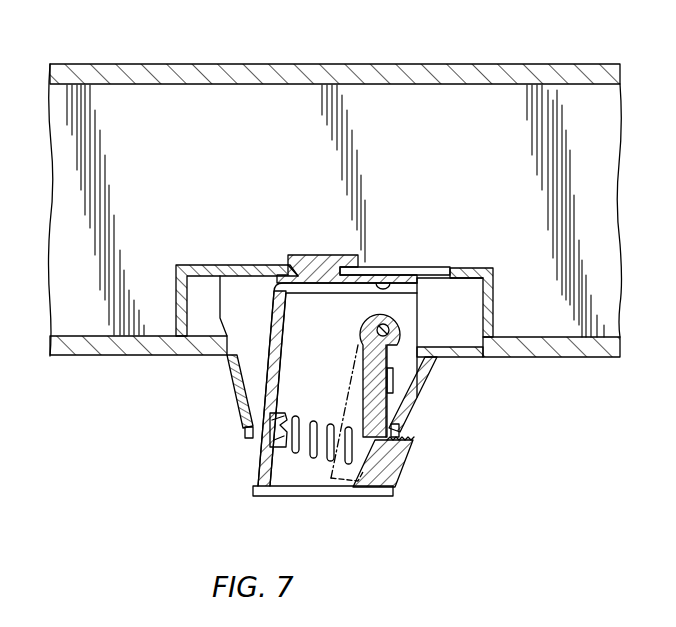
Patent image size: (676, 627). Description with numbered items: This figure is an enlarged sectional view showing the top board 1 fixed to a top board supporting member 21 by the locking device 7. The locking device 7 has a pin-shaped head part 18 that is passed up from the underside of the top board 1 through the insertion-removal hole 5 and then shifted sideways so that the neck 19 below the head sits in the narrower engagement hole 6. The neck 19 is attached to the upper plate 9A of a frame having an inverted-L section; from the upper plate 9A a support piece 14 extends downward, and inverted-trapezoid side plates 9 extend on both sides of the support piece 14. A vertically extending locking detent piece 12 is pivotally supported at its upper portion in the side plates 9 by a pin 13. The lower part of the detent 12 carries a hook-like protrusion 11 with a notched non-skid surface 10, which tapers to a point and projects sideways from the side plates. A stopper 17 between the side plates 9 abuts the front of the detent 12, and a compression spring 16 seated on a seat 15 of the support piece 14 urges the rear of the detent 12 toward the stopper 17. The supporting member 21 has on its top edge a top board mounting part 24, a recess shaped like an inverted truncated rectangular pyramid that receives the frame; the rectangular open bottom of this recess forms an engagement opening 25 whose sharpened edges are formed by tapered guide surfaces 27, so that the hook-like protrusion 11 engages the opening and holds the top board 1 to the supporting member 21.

The top board 1 is at (426, 59).
The top board supporting member 21 is at (90, 356).
The locking device 7 is at (218, 288).
The tapered guide surface 27 is at (228, 372).
The head part 18 is at (306, 256).
The neck 19 is at (327, 272).
The engagement hole 6 is at (366, 270).
The upper plate 9A is at (386, 284).
The insertion-removal hole 5 is at (432, 268).
The side plate 9 is at (313, 328).
The support piece 14 is at (270, 382).
The engagement opening 25 is at (246, 432).
The seat 15 is at (274, 432).
The compression spring 16 is at (347, 462).
The locking detent piece 12 is at (355, 394).
The pin 13 is at (400, 328).
The stopper 17 is at (394, 382).
The top board mounting part 24 is at (438, 372).
The hook-like protrusion 11 is at (403, 468).
The notched non-skid surface 10 is at (414, 440).